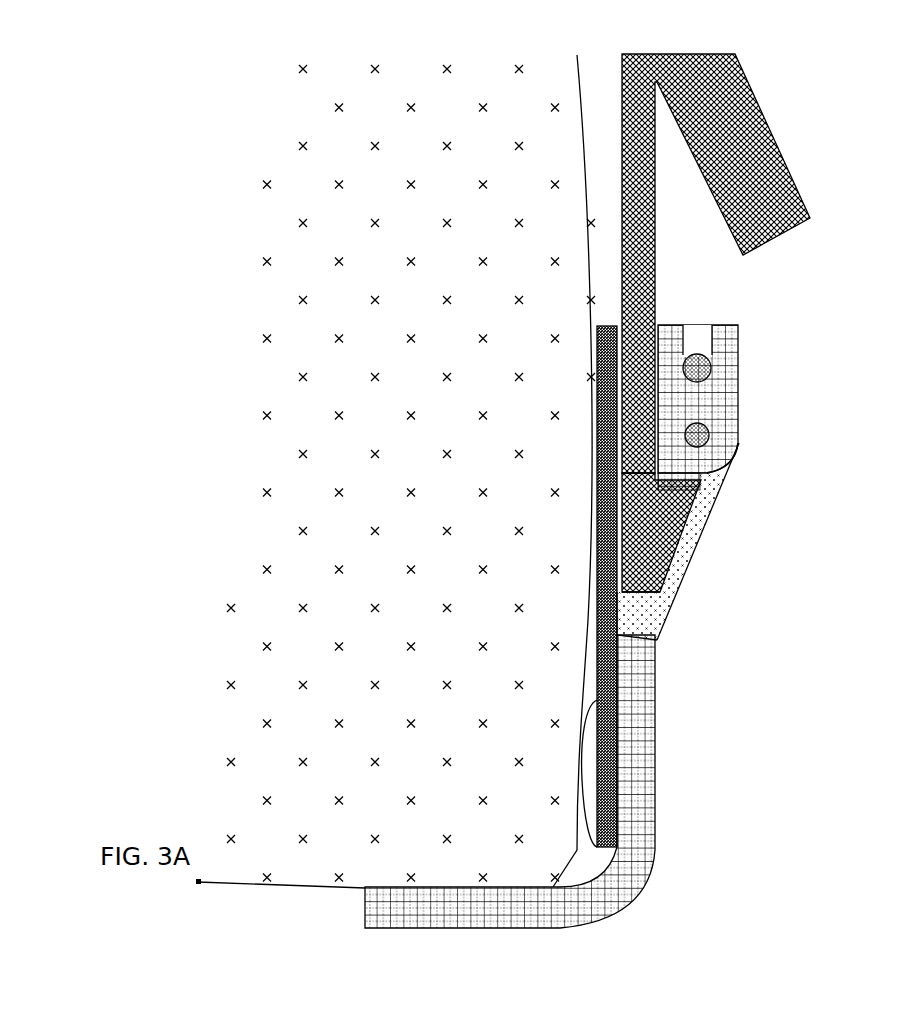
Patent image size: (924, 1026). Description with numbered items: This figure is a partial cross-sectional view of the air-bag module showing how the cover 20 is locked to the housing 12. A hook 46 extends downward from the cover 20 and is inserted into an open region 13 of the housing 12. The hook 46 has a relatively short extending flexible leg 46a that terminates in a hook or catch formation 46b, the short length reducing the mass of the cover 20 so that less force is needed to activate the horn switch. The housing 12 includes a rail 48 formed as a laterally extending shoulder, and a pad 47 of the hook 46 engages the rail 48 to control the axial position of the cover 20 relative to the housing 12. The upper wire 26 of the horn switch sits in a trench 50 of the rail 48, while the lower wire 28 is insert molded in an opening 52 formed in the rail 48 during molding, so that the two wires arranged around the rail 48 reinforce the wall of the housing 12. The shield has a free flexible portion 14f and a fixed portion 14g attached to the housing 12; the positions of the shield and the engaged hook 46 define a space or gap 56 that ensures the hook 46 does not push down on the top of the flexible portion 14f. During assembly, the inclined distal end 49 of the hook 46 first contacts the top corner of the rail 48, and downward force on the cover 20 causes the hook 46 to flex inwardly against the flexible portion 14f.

The flexible leg 46a is at (620, 95).
The cover 20 is at (590, 187).
The space or gap 56 is at (600, 250).
The free flexible portion 14f is at (600, 420).
The fixed portion 14g is at (577, 753).
The upper wire 26 is at (703, 340).
The trench 50 is at (705, 345).
The rail 48 is at (738, 372).
The housing 12 is at (739, 400).
The lower wire 28 is at (712, 437).
The opening 52 is at (738, 443).
The pad 47 is at (697, 482).
The hook 46 is at (683, 550).
The hook or catch formation 46b is at (672, 568).
The inclined distal end 49 is at (628, 598).
The open region 13 is at (668, 615).